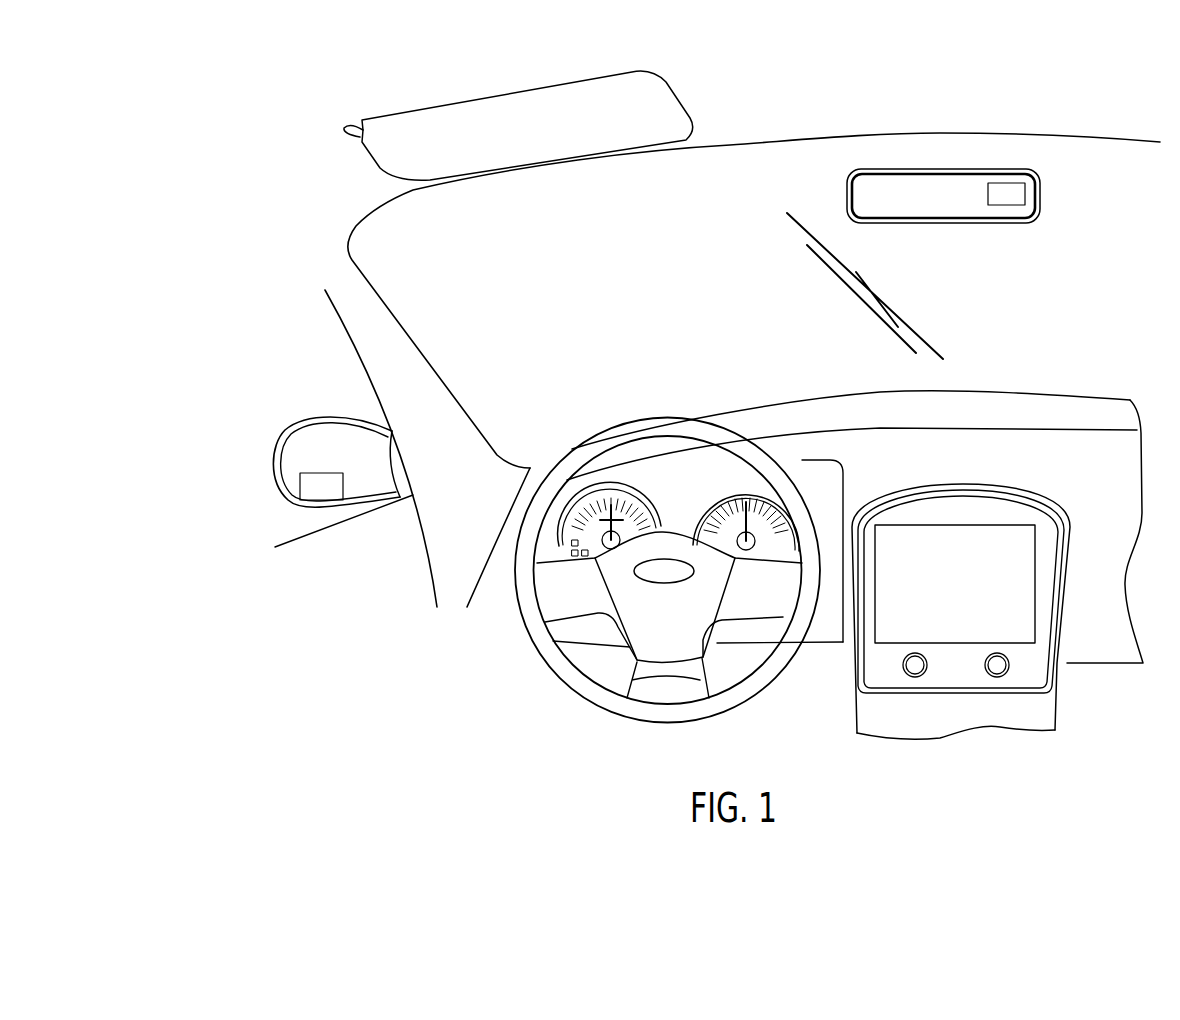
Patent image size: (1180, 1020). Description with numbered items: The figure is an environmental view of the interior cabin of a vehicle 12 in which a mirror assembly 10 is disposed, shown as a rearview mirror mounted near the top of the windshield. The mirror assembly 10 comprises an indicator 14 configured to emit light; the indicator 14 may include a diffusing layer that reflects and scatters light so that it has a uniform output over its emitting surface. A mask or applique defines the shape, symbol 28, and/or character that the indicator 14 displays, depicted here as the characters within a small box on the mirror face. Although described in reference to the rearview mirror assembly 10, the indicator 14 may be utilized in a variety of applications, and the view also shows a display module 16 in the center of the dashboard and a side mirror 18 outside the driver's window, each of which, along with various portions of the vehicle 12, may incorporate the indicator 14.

The mirror assembly 10 is at (682, 342).
The vehicle 12 is at (282, 163).
The indicator 14 is at (298, 500).
The display module 16 is at (1045, 657).
The side mirror 18 is at (292, 457).
The symbol 28 is at (318, 476).